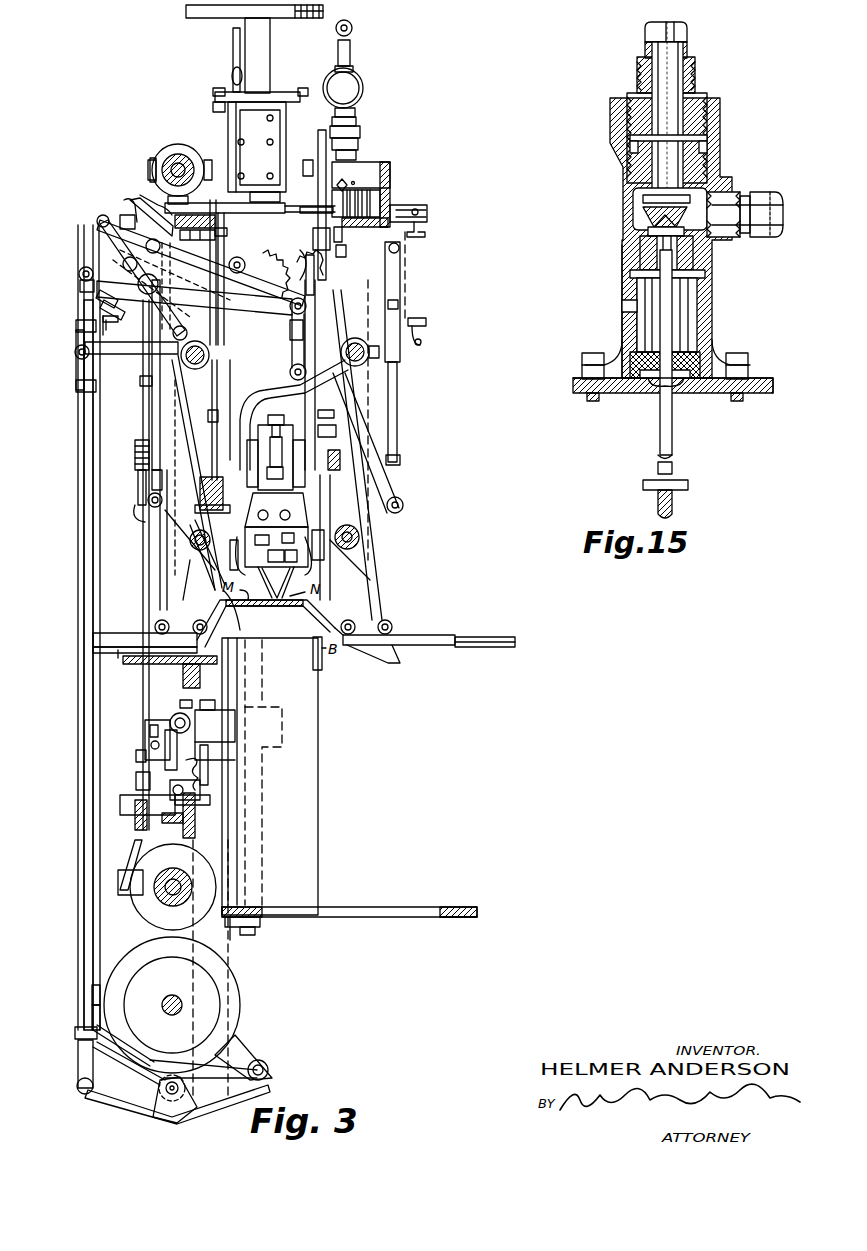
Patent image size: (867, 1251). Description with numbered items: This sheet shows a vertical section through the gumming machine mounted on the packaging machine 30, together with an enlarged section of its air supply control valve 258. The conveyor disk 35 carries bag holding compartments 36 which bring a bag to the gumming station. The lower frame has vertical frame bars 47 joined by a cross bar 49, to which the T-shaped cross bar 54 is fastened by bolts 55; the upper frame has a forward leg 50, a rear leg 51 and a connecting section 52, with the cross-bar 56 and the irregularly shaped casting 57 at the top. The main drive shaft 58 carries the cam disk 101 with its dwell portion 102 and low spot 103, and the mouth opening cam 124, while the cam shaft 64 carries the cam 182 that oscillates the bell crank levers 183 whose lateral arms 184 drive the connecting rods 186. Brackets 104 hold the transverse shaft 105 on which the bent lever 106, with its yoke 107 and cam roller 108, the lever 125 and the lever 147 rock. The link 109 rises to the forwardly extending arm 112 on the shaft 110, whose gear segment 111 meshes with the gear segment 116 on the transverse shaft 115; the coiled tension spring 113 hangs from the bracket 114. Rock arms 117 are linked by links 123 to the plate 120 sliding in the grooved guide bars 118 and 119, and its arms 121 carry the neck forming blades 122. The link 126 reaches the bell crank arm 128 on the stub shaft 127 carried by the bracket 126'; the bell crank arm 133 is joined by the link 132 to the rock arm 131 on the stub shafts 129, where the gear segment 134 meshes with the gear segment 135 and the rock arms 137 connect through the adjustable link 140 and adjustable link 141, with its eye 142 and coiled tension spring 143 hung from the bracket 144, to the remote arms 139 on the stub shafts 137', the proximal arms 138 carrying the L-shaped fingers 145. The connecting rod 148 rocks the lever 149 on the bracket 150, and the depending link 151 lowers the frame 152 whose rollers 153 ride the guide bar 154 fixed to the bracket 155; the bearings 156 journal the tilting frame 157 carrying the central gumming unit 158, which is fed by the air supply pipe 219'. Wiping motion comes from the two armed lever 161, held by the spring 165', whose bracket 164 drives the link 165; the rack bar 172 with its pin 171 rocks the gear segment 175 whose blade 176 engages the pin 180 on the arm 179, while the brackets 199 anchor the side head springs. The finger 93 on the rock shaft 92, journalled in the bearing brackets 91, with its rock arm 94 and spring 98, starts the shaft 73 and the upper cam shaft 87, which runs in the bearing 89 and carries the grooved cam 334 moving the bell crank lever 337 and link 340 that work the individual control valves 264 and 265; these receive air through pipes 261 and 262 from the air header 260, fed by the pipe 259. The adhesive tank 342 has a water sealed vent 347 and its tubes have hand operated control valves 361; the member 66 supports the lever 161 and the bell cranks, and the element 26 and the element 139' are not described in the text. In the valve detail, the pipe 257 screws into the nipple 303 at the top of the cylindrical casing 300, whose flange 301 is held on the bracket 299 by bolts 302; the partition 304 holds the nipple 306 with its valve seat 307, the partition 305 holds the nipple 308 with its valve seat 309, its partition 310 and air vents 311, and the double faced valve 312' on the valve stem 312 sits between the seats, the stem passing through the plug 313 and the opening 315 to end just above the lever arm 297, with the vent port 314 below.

In FIG. 3, the rod 26 is at (229, 33).
In FIG. 3, the water sealed vent 347 is at (230, 76).
In FIG. 3, the adhesive tank 342 is at (272, 108).
In FIG. 3, the link 340 is at (260, 147).
In FIG. 3, the bell crank lever 337 is at (208, 202).
In FIG. 3, the grooved cam 334 is at (200, 134).
In FIG. 3, the upper cam shaft 87 is at (168, 160).
In FIG. 3, the bearing 89 is at (150, 163).
In FIG. 3, the cross-bar 56 is at (148, 196).
In FIG. 3, the hand operated control valve 361 is at (230, 272).
In FIG. 3, the connecting section 52 is at (307, 208).
In FIG. 3, the pipe 259 is at (357, 50).
In FIG. 15, the pipe 259 is at (782, 237).
In FIG. 3, the air header 260 is at (365, 90).
In FIG. 3, the pipe 262 is at (366, 110).
In FIG. 3, the pipe 261 is at (358, 118).
In FIG. 3, the individual control valve 265 is at (368, 162).
In FIG. 3, the irregularly shaped casting 57 is at (390, 181).
In FIG. 3, the rollers 153 is at (400, 208).
In FIG. 3, the bracket 144 is at (420, 222).
In FIG. 3, the guide bar 154 is at (319, 140).
In FIG. 3, the individual control valve 264 is at (312, 166).
In FIG. 3, the rock arms 137 is at (424, 302).
In FIG. 3, the adjustable link 141 is at (398, 468).
In FIG. 3, the coiled tension spring 143 is at (426, 323).
In FIG. 3, the eye 142 is at (425, 344).
In FIG. 3, the bracket 114 is at (128, 203).
In FIG. 3, the coiled tension spring 113 is at (125, 212).
In FIG. 3, the bracket 150 is at (120, 226).
In FIG. 3, the bell crank arm 128 is at (110, 248).
In FIG. 3, the bracket 126' is at (71, 262).
In FIG. 3, the stub shaft 127 is at (100, 264).
In FIG. 3, the lever 149 is at (85, 278).
In FIG. 3, the bell crank arm 133 is at (82, 285).
In FIG. 3, the link 132 is at (100, 299).
In FIG. 3, the connecting rod 148 is at (100, 311).
In FIG. 3, the rock arm 131 is at (215, 330).
In FIG. 3, the depending link 151 is at (306, 324).
In FIG. 3, the stub shafts 129 is at (250, 262).
In FIG. 3, the gear segment 135 is at (316, 285).
In FIG. 3, the gear segment 134 is at (312, 302).
In FIG. 3, the forwardly extending arm 112 is at (86, 371).
In FIG. 3, the shaft 110 is at (124, 360).
In FIG. 3, the gear segment 111 is at (212, 368).
In FIG. 3, the adjustable link 140 is at (125, 391).
In FIG. 3, the link 126 is at (66, 387).
In FIG. 3, the pin 180 is at (143, 443).
In FIG. 3, the arm 179 is at (147, 453).
In FIG. 3, the blade 176 is at (217, 437).
In FIG. 3, the brackets 199 is at (220, 443).
In FIG. 3, the gear segment 175 is at (227, 447).
In FIG. 3, the rack bar 172 is at (163, 460).
In FIG. 3, the shaft 73 is at (196, 467).
In FIG. 3, the remote arms 139 is at (174, 498).
In FIG. 3, the pin 171 is at (208, 508).
In FIG. 3, the stub shafts 137' is at (278, 555).
In FIG. 3, the proximal arms 138 is at (165, 549).
In FIG. 3, the rock arms 117 is at (165, 571).
In FIG. 3, the L-shaped fingers 145 is at (200, 571).
In FIG. 3, the transverse shaft 115 is at (362, 356).
In FIG. 3, the gear segment 116 is at (300, 385).
In FIG. 3, the frame 152 is at (302, 396).
In FIG. 3, the central gumming unit 158 is at (332, 420).
In FIG. 3, the bracket 155 is at (340, 460).
In FIG. 3, the tilting frame 157 is at (345, 520).
In FIG. 3, the air supply pipe 219' is at (287, 445).
In FIG. 3, the bearings 156 is at (315, 509).
In FIG. 3, the bearing 139' is at (373, 535).
In FIG. 3, the rear leg 51 is at (356, 598).
In FIG. 3, the forward leg 50 is at (185, 590).
In FIG. 3, the neck forming blade 122 is at (355, 620).
In FIG. 3, the links 123 is at (390, 620).
In FIG. 3, the arms 121 is at (410, 640).
In FIG. 3, the grooved guide bars 119 is at (516, 642).
In FIG. 3, the plate 120 is at (450, 650).
In FIG. 3, the grooved guide bars 118 is at (118, 647).
In FIG. 3, the T-shaped cross bar 54 is at (125, 660).
In FIG. 3, the bolts 55 is at (185, 685).
In FIG. 3, the bag holding compartments 36 is at (305, 829).
In FIG. 3, the conveyor disk 35 is at (300, 917).
In FIG. 3, the packaging machine 30 is at (459, 923).
In FIG. 3, the frame bars 47 is at (234, 937).
In FIG. 3, the cross bar 49 is at (240, 682).
In FIG. 3, the finger 93 is at (215, 722).
In FIG. 3, the bearing brackets 91 is at (210, 702).
In FIG. 3, the two armed lever 161 is at (178, 715).
In FIG. 3, the spring 165' is at (132, 730).
In FIG. 3, the link 165 is at (138, 740).
In FIG. 3, the bracket 164 is at (140, 756).
In FIG. 3, the spring 98 is at (150, 767).
In FIG. 3, the connecting rods 186 is at (140, 779).
In FIG. 3, the rock arm 94 is at (170, 791).
In FIG. 3, the rock shaft 92 is at (205, 757).
In FIG. 3, the lateral arms 184 is at (125, 815).
In FIG. 3, the member 66 is at (196, 814).
In FIG. 3, the bell crank levers 183 is at (130, 852).
In FIG. 3, the cam 182 is at (205, 872).
In FIG. 3, the cam shaft 64 is at (152, 904).
In FIG. 3, the link 109 is at (84, 903).
In FIG. 3, the main drive shaft 58 is at (185, 1000).
In FIG. 3, the cam disk 101 is at (238, 1004).
In FIG. 3, the dwell portion 102 is at (240, 1023).
In FIG. 3, the low spot 103 is at (115, 1001).
In FIG. 3, the mouth opening cam 124 is at (108, 1019).
In FIG. 3, the brackets 104 is at (245, 1052).
In FIG. 3, the transverse shaft 105 is at (268, 1072).
In FIG. 3, the lever 125 is at (105, 1048).
In FIG. 3, the lever 147 is at (105, 1062).
In FIG. 3, the bent lever 106 is at (132, 1108).
In FIG. 3, the yoke 107 is at (165, 1115).
In FIG. 3, the cam roller 108 is at (182, 1102).
In FIG. 15, the pipe 257 is at (688, 38).
In FIG. 15, the nipple 303 is at (630, 89).
In FIG. 15, the air supply control valve 258 is at (603, 132).
In FIG. 15, the nipple 306 is at (632, 156).
In FIG. 15, the partition 304 is at (640, 176).
In FIG. 15, the valve seat 307 is at (640, 201).
In FIG. 15, the double faced valve 312' is at (617, 217).
In FIG. 15, the valve seat 309 is at (650, 239).
In FIG. 15, the nipple 308 is at (640, 258).
In FIG. 15, the partition 305 is at (636, 274).
In FIG. 15, the partition 310 is at (630, 291).
In FIG. 15, the air vents 311 is at (700, 291).
In FIG. 15, the vent port 314 is at (625, 314).
In FIG. 15, the cylindrical casing 300 is at (705, 313).
In FIG. 15, the bolts 302 is at (588, 353).
In FIG. 15, the flange 301 is at (575, 373).
In FIG. 15, the plug 313 is at (630, 380).
In FIG. 15, the valve stem 312 is at (637, 362).
In FIG. 15, the opening 315 is at (675, 395).
In FIG. 15, the bracket 299 is at (748, 395).
In FIG. 15, the lever arm 297 is at (658, 511).